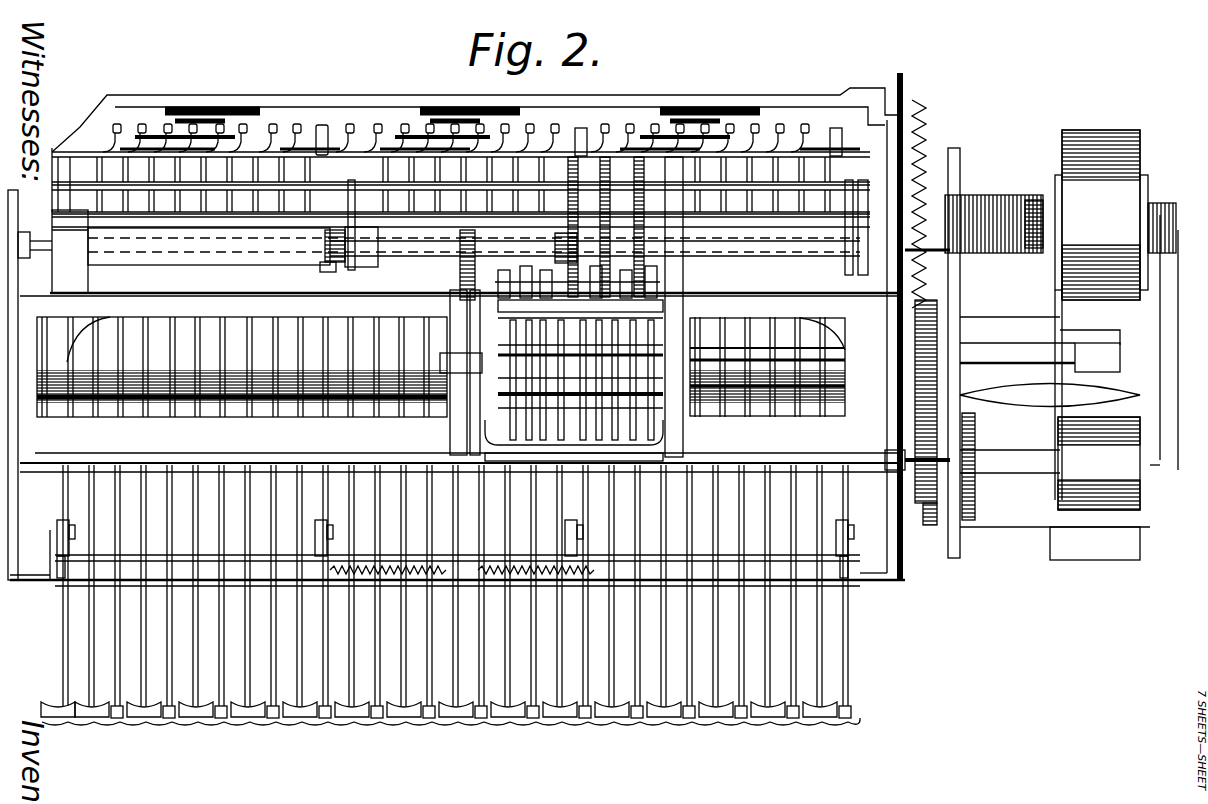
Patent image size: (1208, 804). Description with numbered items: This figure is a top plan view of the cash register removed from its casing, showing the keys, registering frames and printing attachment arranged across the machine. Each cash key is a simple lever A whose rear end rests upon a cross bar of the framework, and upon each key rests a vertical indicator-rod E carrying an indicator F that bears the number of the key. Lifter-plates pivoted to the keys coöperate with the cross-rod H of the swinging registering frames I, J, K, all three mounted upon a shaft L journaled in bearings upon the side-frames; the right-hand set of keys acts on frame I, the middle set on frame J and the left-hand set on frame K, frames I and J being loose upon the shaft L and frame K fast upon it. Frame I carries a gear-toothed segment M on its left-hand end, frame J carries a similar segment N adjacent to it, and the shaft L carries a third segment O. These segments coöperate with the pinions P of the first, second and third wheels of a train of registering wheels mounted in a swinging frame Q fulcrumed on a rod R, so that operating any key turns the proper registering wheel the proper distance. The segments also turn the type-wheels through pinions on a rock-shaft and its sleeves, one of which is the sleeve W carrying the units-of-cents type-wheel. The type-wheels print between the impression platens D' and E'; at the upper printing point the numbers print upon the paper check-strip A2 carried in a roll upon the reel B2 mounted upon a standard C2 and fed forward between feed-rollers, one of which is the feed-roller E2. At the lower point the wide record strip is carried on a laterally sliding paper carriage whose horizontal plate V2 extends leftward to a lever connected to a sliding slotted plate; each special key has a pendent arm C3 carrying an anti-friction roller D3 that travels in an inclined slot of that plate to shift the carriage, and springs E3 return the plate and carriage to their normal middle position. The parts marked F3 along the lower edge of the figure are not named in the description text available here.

The lever A is at (822, 647).
The indicator-rod E is at (329, 111).
The indicator F is at (208, 112).
The cross-rod H is at (268, 195).
The registering frame I is at (795, 262).
The registering frame J is at (430, 228).
The registering frame K is at (202, 262).
The shaft L is at (70, 251).
The gear-toothed segment M is at (645, 227).
The gear-toothed segment N is at (596, 227).
The gear-toothed segment O is at (568, 266).
The pinions P is at (574, 390).
The swinging frame Q is at (640, 314).
The rod R is at (760, 392).
The paper check-strip A2 is at (1101, 215).
The reel B2 is at (1168, 203).
The standard C2 is at (1008, 183).
The sleeve W is at (1000, 352).
The impression platen E' is at (1090, 333).
The impression platen D' is at (1097, 357).
The horizontal plate V2 is at (1180, 372).
The feed-roller E2 is at (1099, 463).
The pendent arm C3 is at (858, 514).
The anti-friction roller D3 is at (870, 598).
The springs E3 is at (520, 575).
The type scoops F3 is at (862, 682).